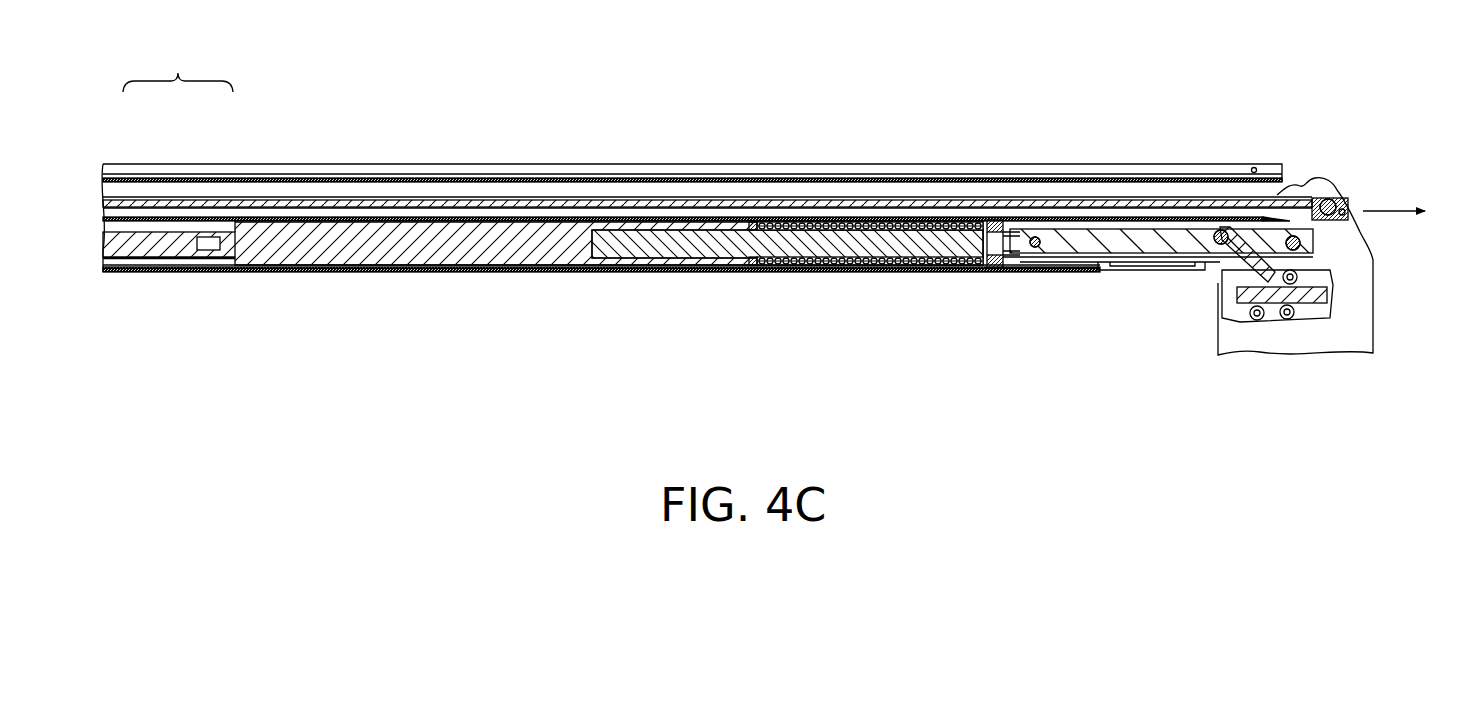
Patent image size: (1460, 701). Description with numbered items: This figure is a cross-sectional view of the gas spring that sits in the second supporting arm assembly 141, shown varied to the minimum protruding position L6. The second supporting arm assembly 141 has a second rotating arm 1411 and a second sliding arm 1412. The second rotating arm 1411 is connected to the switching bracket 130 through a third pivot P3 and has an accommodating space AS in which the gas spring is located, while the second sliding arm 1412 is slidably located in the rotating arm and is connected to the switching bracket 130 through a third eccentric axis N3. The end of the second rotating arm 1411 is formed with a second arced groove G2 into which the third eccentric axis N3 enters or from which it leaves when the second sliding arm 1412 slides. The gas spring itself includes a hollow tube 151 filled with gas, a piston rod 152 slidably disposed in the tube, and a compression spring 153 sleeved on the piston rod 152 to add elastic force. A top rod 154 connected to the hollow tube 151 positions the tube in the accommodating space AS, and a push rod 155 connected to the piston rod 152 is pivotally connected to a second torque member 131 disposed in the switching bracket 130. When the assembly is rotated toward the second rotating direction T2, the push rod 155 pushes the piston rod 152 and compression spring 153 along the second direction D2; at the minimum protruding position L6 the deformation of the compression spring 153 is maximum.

The second supporting arm assembly 141 is at (178, 68).
The second rotating arm 1411 is at (160, 176).
The second sliding arm 1412 is at (217, 200).
The hollow tube 151 is at (558, 250).
The piston rod 152 is at (825, 264).
The compression spring 153 is at (777, 266).
The top rod 154 is at (133, 252).
The push rod 155 is at (1133, 242).
The switching bracket 130 is at (1323, 345).
The second torque member 131 is at (1307, 297).
The accommodating space AS is at (1100, 228).
The second arced groove G2 is at (1283, 190).
The second rotating direction T2 is at (1279, 127).
The third eccentric axis N3 is at (1340, 200).
The third pivot P3 is at (1300, 244).
The second direction D2 is at (982, 292).
The minimum protruding position L6 is at (995, 274).